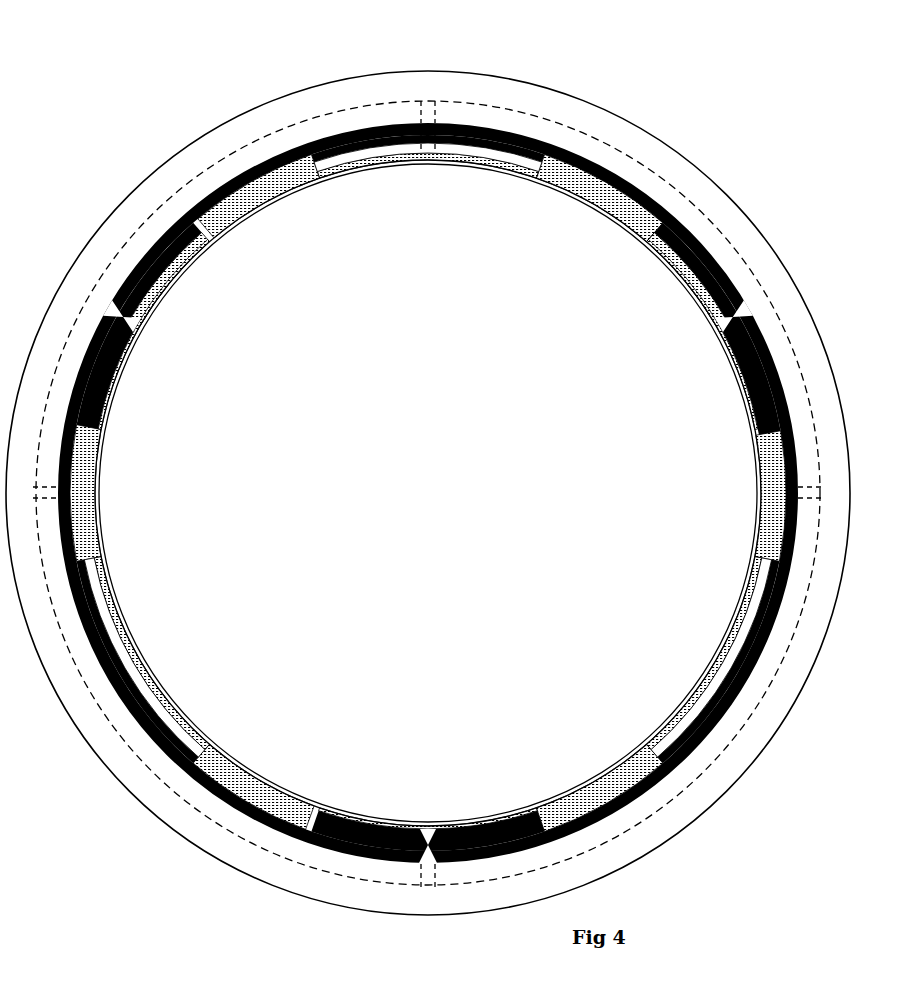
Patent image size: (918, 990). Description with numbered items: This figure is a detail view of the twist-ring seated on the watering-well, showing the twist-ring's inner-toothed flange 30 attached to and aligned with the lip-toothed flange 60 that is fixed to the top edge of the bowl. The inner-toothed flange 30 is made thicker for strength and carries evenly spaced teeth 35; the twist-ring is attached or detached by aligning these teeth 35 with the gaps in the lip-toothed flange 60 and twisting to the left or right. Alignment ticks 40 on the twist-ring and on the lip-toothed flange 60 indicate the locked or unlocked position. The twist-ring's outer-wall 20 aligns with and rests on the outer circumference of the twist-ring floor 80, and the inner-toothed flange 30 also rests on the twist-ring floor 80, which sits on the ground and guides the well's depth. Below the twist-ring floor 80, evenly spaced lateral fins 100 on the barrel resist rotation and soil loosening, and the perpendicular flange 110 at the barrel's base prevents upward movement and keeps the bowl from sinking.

The outer-wall 20 is at (688, 147).
The inner-toothed flange 30 is at (189, 195).
The teeth 35 is at (233, 194).
The alignment-tick 40 is at (432, 813).
The lip-toothed flange 60 is at (168, 230).
The twist-ring floor 80 is at (116, 216).
The lateral fin 100 is at (412, 870).
The perpendicular flange 110 is at (648, 818).